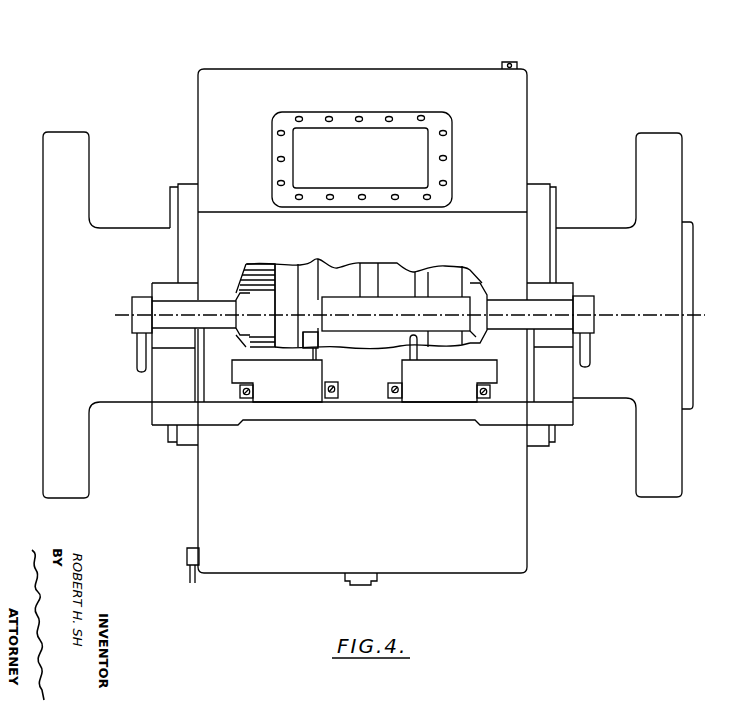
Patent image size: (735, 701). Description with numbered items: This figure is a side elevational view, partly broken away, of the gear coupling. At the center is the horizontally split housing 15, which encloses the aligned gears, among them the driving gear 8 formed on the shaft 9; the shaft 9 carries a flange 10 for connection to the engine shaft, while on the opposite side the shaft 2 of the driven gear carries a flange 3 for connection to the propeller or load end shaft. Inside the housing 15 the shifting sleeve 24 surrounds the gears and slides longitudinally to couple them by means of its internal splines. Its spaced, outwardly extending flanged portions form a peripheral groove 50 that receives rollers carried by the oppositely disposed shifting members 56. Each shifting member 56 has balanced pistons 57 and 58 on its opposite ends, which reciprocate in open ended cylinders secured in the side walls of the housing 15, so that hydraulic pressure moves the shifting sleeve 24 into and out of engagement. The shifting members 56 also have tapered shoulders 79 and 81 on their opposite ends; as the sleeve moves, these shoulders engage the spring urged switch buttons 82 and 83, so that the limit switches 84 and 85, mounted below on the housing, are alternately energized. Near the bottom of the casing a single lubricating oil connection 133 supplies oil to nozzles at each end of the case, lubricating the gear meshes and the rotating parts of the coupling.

The shaft 2 is at (598, 229).
The flange 3 is at (656, 134).
The driving gear 8 is at (250, 274).
The shaft 9 is at (137, 228).
The flange 10 is at (68, 137).
The housing 15 is at (527, 486).
The shifting sleeve 24 is at (442, 276).
The peripheral groove 50 is at (400, 278).
The shifting members 56 is at (390, 328).
The piston 57 is at (285, 305).
The piston 58 is at (472, 287).
The tapered shoulder 79 is at (311, 342).
The tapered shoulder 81 is at (478, 336).
The switch button 82 is at (319, 340).
The switch button 83 is at (418, 346).
The limit switch 84 is at (300, 396).
The limit switch 85 is at (432, 398).
The oil connection 133 is at (189, 549).